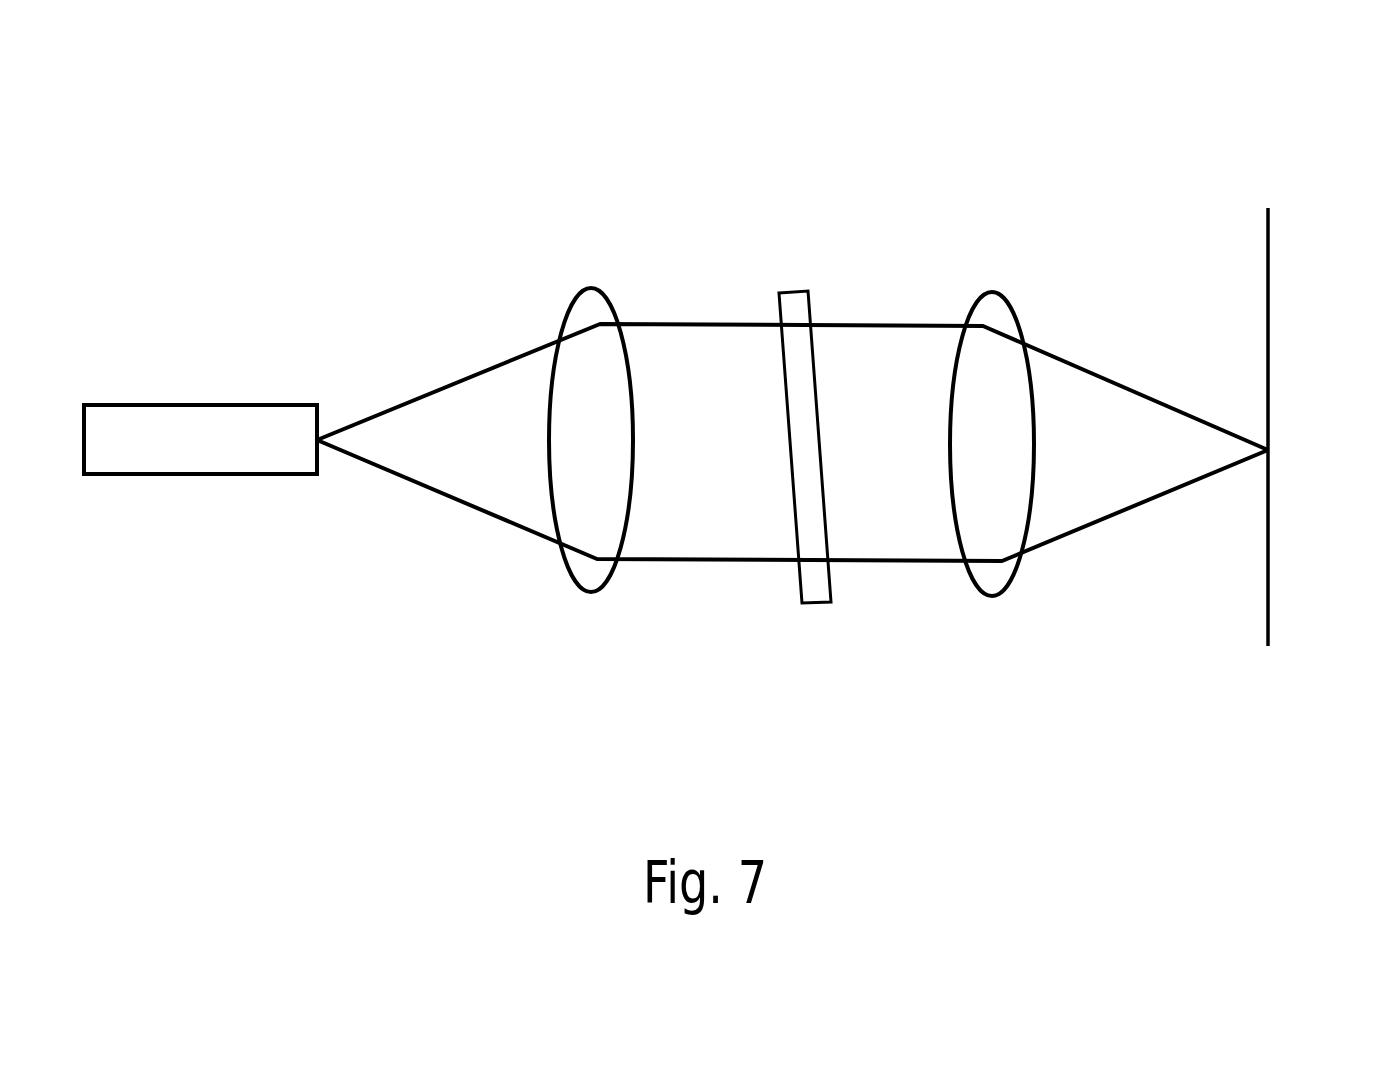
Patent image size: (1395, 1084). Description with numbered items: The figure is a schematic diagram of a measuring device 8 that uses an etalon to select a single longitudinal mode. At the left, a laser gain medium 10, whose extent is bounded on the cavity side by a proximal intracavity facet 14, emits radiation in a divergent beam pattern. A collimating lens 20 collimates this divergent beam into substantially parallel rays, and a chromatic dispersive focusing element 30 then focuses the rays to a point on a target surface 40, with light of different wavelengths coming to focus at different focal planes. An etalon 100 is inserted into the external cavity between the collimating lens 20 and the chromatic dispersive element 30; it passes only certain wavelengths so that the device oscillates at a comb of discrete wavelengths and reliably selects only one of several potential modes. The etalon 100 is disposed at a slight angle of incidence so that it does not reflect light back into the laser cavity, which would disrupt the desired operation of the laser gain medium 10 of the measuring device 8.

The measuring device 8 is at (1115, 177).
The laser gain medium 10 is at (162, 405).
The proximal intracavity facet 14 is at (320, 413).
The collimating lens 20 is at (572, 308).
The chromatic dispersive focusing element 30 is at (970, 318).
The target surface 40 is at (1269, 313).
The etalon 100 is at (816, 583).